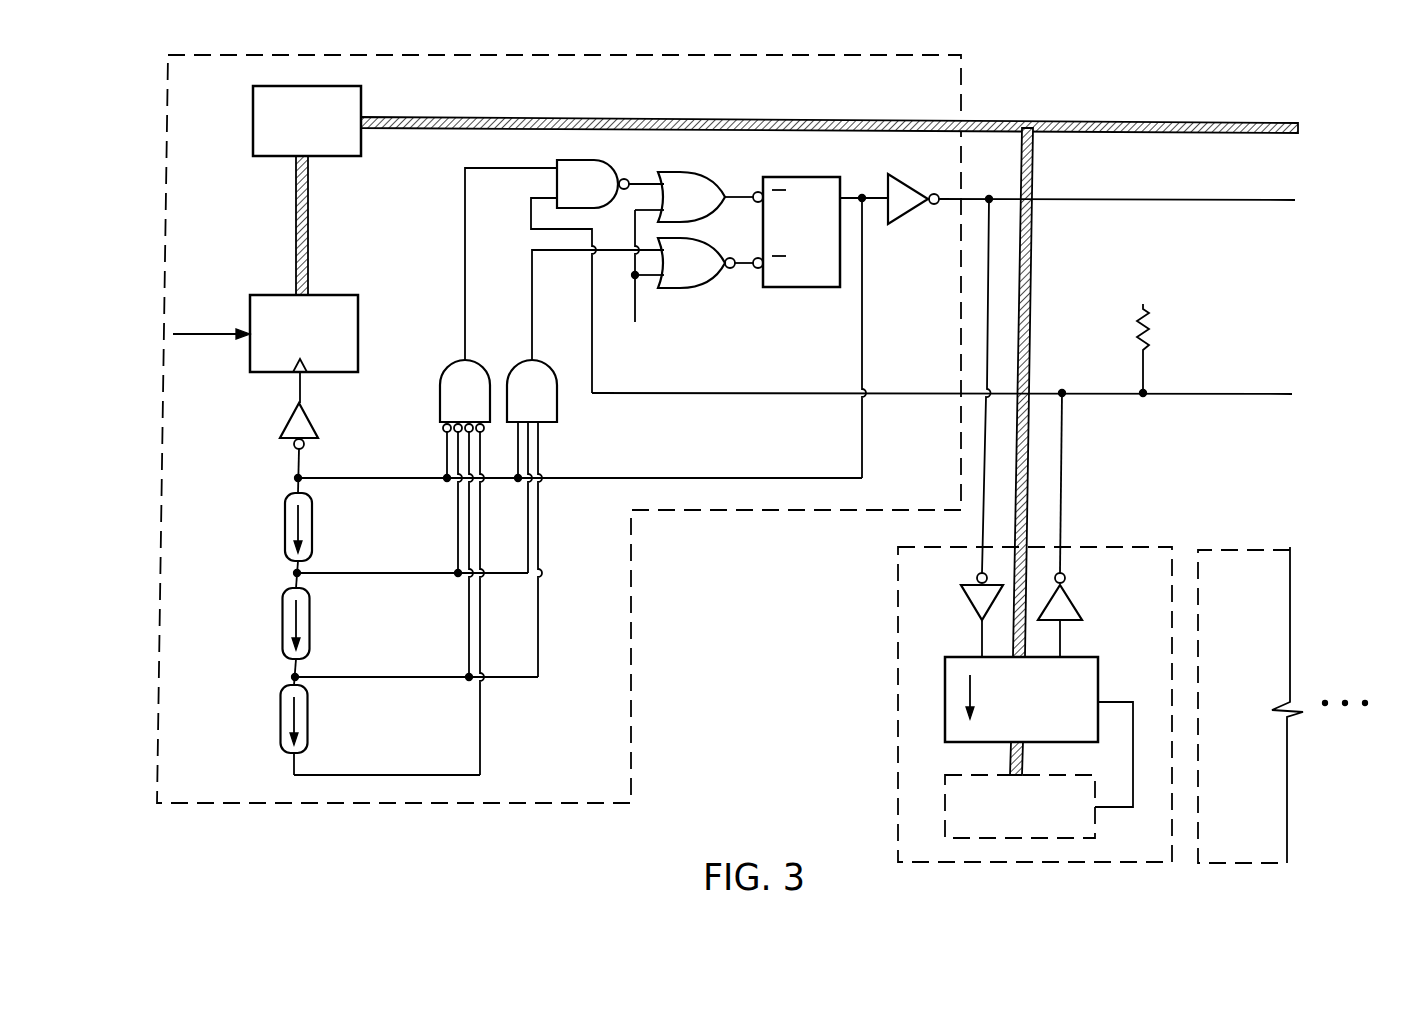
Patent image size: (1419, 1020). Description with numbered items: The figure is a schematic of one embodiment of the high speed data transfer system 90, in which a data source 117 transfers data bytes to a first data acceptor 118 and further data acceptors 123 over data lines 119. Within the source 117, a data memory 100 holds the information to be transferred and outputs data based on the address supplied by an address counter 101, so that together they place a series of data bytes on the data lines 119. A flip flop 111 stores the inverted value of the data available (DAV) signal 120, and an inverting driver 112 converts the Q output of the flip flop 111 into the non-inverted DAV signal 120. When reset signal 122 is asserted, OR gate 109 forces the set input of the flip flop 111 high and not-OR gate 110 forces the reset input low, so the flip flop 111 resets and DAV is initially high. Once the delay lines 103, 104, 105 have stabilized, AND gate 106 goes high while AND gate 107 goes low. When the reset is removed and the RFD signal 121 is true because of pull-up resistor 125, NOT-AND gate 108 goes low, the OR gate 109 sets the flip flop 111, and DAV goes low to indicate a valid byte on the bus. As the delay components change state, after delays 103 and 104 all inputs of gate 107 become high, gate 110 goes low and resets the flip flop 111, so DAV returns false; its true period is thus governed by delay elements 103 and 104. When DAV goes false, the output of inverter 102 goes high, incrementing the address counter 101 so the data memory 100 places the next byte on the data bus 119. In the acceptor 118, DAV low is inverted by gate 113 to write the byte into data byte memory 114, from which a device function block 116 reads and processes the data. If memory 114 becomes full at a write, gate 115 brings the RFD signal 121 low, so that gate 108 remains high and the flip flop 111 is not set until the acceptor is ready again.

The system 90 is at (1162, 77).
The data memory 100 is at (253, 117).
The address counter 101 is at (270, 295).
The inverter 102 is at (283, 423).
The delay line 103 is at (285, 505).
The delay line 104 is at (283, 606).
The delay line 105 is at (281, 706).
The AND gate 106 is at (445, 360).
The AND gate 107 is at (516, 360).
The NOT-AND gate 108 is at (597, 196).
The OR gate 109 is at (683, 173).
The not-OR gate 110 is at (702, 282).
The flip flop 111 is at (793, 287).
The inverting driver 112 is at (906, 213).
The gate 113 is at (961, 598).
The data byte memory 114 is at (945, 712).
The gate 115 is at (1078, 598).
The device function block 116 is at (1097, 832).
The data source 117 is at (631, 742).
The data acceptor 118 is at (898, 748).
The data lines 119 is at (1073, 120).
The data available (DAV) signal 120 is at (1105, 197).
The RFD signal 121 is at (1205, 392).
The reset signal 122 is at (637, 305).
The data acceptor 123 is at (1300, 596).
The pull-up resistor 125 is at (1150, 330).